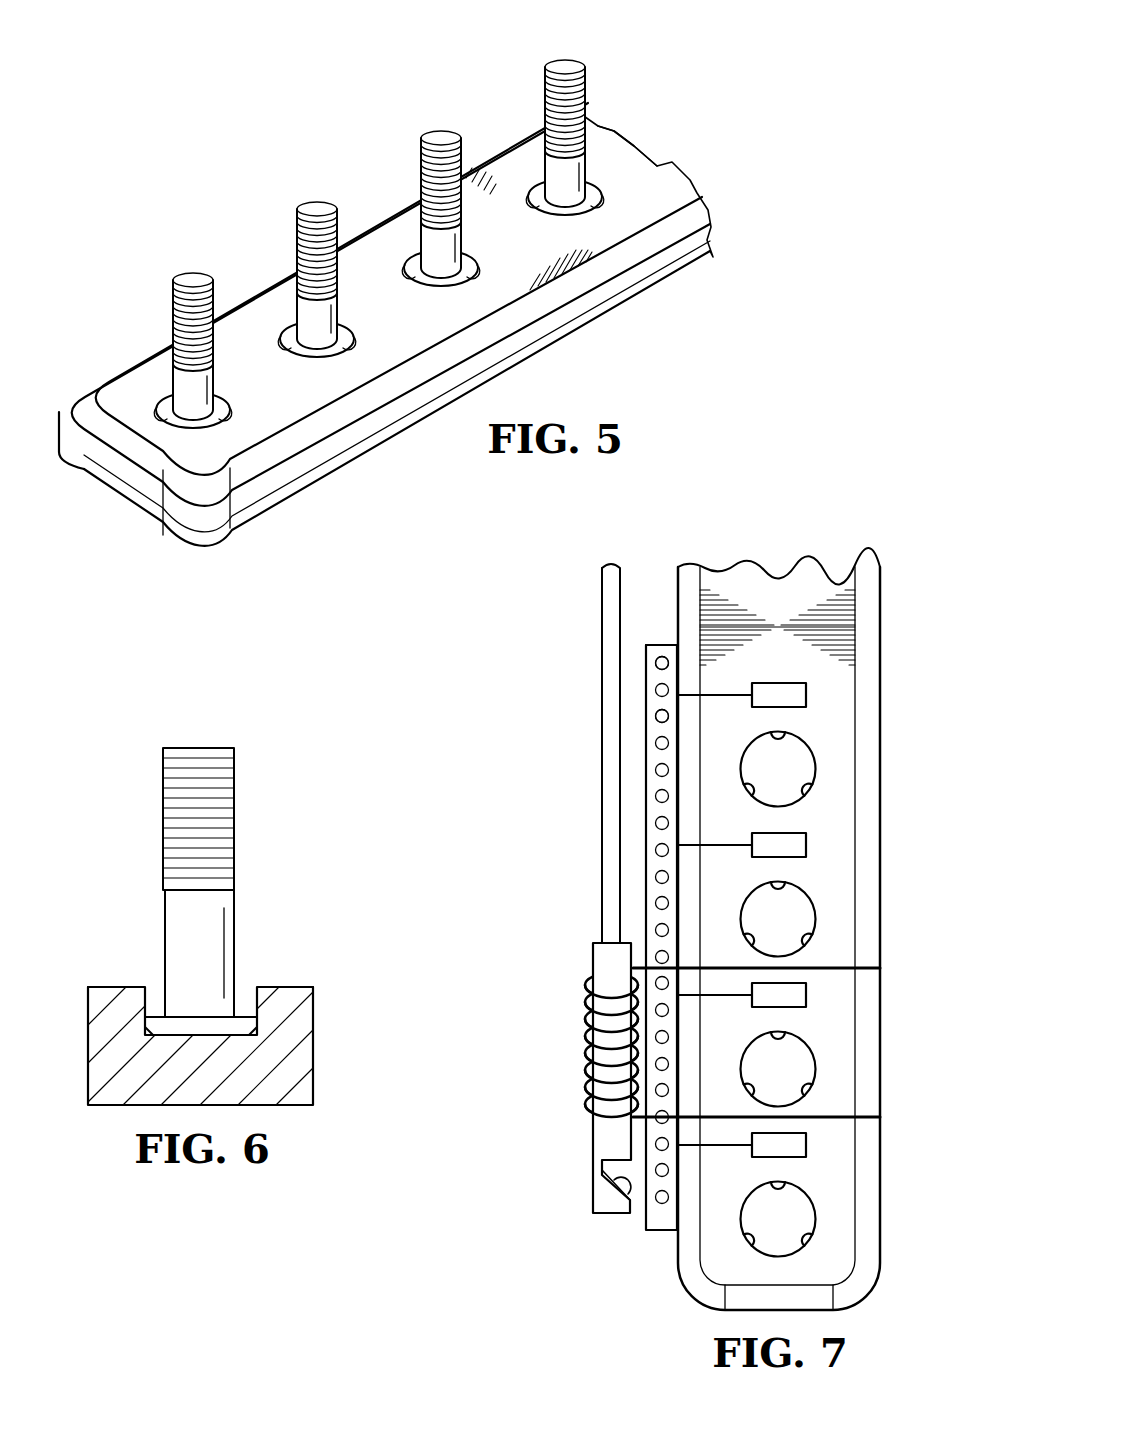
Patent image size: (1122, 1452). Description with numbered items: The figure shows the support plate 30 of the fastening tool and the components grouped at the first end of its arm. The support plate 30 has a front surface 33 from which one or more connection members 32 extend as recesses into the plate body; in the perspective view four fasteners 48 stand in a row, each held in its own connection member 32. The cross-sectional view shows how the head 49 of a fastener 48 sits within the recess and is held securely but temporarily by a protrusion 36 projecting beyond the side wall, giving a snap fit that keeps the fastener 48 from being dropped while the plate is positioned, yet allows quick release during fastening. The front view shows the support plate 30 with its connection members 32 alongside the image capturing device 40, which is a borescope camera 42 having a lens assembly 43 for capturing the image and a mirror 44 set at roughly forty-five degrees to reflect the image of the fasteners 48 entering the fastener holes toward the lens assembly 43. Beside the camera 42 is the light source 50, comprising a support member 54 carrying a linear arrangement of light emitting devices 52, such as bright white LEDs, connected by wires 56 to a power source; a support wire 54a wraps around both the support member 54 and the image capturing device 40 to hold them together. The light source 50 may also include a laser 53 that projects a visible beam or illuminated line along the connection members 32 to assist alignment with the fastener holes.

In FIG. 5, the support plate 30 is at (672, 302).
In FIG. 7, the support plate 30 is at (828, 547).
In FIG. 7, the connection member 32 is at (824, 773).
In FIG. 5, the front surface 33 is at (658, 178).
In FIG. 6, the protrusion 36 is at (162, 1003).
In FIG. 7, the image capturing device 40 is at (562, 1032).
In FIG. 7, the camera 42 is at (593, 955).
In FIG. 7, the lens assembly 43 is at (602, 1178).
In FIG. 7, the mirror 44 is at (616, 1182).
In FIG. 5, the fastener 48 is at (193, 280).
In FIG. 6, the fastener 48 is at (235, 884).
In FIG. 6, the head 49 is at (207, 1027).
In FIG. 7, the light source 50 is at (647, 1235).
In FIG. 7, the light emitting device 52 is at (652, 663).
In FIG. 7, the laser 53 is at (806, 700).
In FIG. 7, the support member 54 is at (653, 782).
In FIG. 7, the support wire 54a is at (720, 967).
In FIG. 7, the wires 56 is at (657, 643).